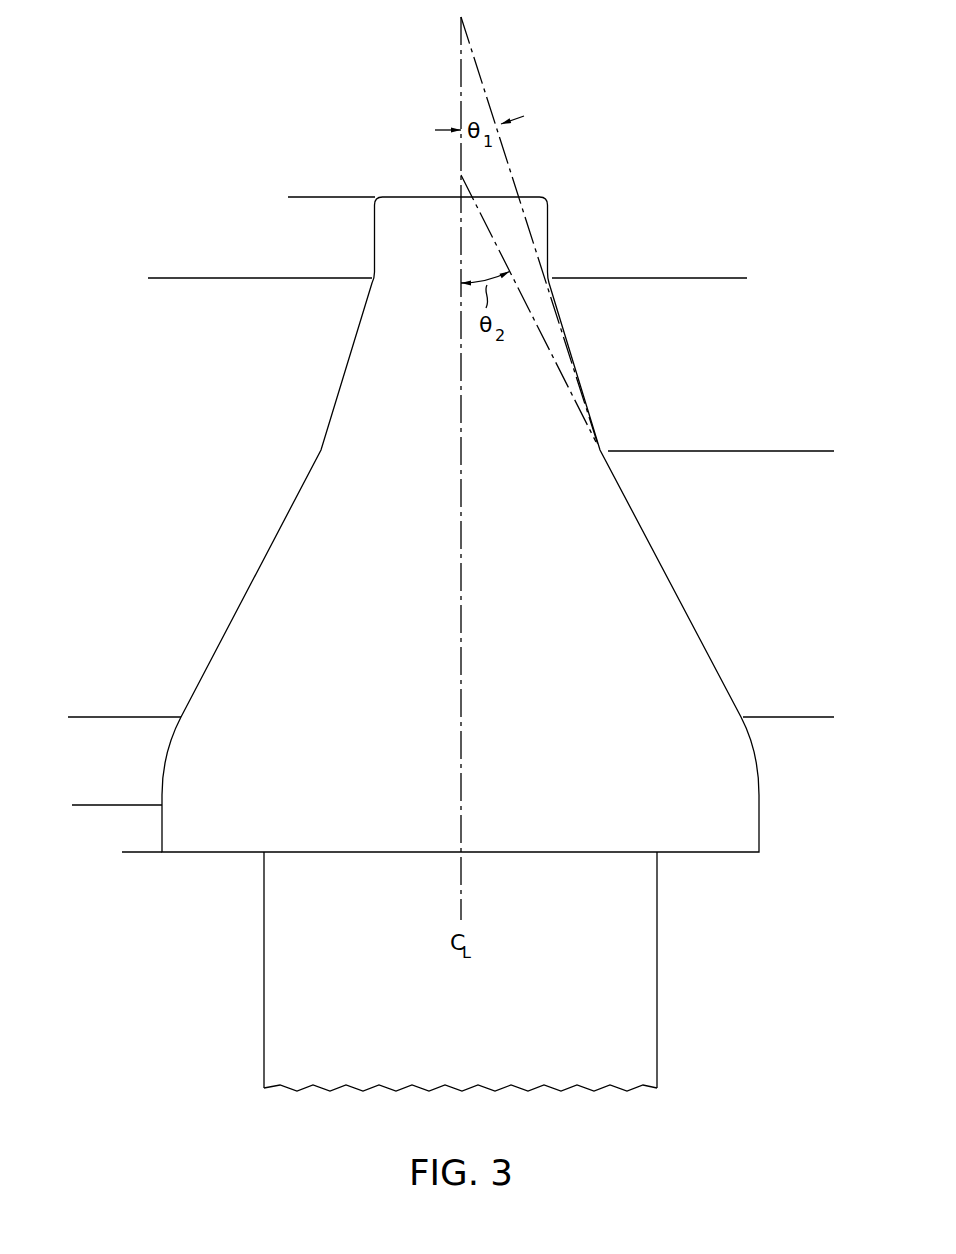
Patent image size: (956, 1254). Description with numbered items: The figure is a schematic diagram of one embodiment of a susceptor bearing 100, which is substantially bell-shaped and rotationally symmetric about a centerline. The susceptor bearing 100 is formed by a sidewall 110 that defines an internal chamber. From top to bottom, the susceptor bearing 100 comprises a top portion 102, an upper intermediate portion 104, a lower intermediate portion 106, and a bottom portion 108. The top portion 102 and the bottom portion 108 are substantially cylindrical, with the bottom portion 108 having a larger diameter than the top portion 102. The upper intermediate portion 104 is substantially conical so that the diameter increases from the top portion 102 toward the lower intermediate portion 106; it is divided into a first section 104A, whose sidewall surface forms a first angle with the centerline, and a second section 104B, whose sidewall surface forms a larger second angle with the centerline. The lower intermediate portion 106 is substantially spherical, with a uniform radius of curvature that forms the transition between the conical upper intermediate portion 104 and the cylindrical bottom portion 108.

The susceptor bearing 100 is at (460, 491).
The top portion 102 is at (292, 197).
The upper intermediate portion 104 is at (152, 278).
The first section 104A is at (747, 278).
The second section 104B is at (833, 451).
The lower intermediate portion 106 is at (72, 717).
The bottom portion 108 is at (122, 775).
The sidewall 110 is at (746, 810).